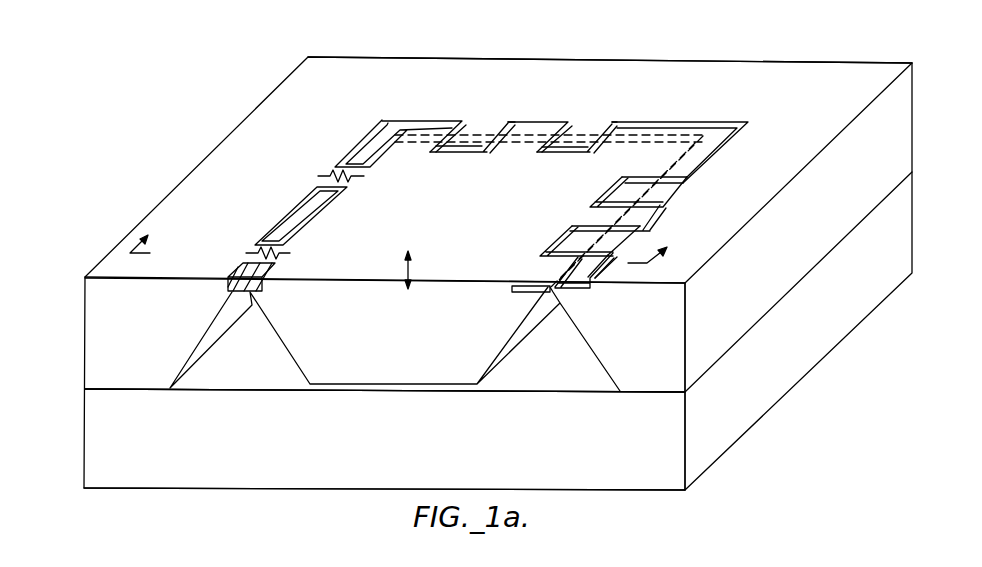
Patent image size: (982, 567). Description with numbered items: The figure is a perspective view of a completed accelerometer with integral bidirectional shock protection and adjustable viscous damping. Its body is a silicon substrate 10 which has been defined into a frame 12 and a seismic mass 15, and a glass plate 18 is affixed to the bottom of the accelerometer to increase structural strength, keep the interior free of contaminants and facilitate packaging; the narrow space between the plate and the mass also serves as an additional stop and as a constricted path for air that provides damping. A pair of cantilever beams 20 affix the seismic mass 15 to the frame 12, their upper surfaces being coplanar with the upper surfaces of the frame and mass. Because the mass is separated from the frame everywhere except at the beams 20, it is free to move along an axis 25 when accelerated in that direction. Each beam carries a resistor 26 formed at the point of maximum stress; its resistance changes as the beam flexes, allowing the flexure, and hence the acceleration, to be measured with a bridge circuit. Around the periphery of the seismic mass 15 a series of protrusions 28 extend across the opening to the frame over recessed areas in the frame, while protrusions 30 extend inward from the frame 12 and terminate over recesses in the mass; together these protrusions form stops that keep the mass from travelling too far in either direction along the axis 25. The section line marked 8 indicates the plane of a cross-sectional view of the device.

The section line 8- 8 is at (409, 241).
The silicon substrate 10 is at (916, 63).
The frame 12 is at (648, 72).
The seismic mass 15 is at (432, 207).
The glass plate 18 is at (916, 175).
The cantilever beams 20 is at (326, 173).
The axis 25 is at (410, 262).
The resistors 26 is at (354, 178).
The protrusions 28 is at (435, 130).
The protrusions 30 is at (475, 128).